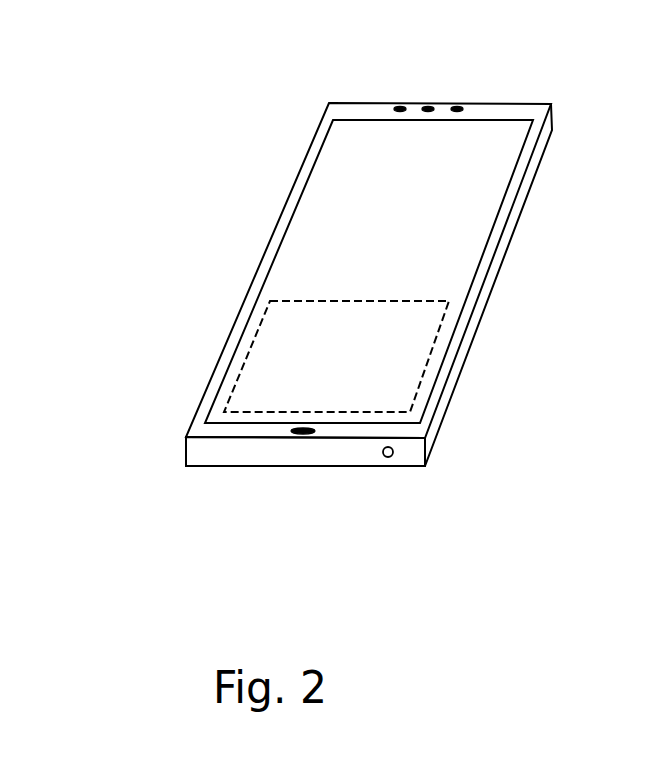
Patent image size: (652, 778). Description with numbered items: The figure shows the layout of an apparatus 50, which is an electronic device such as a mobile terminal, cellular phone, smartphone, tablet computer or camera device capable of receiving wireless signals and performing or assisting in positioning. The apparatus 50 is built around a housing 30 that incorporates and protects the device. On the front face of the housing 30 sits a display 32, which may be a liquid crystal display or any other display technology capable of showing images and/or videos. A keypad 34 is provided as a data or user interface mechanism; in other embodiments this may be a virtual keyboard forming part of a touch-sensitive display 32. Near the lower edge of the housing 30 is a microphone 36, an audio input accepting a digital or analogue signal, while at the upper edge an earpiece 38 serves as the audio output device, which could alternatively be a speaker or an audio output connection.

The housing 30 is at (344, 103).
The display 32 is at (475, 210).
The keypad 34 is at (415, 372).
The microphone 36 is at (303, 434).
The earpiece 38 is at (428, 107).
The apparatus 50 is at (575, 68).